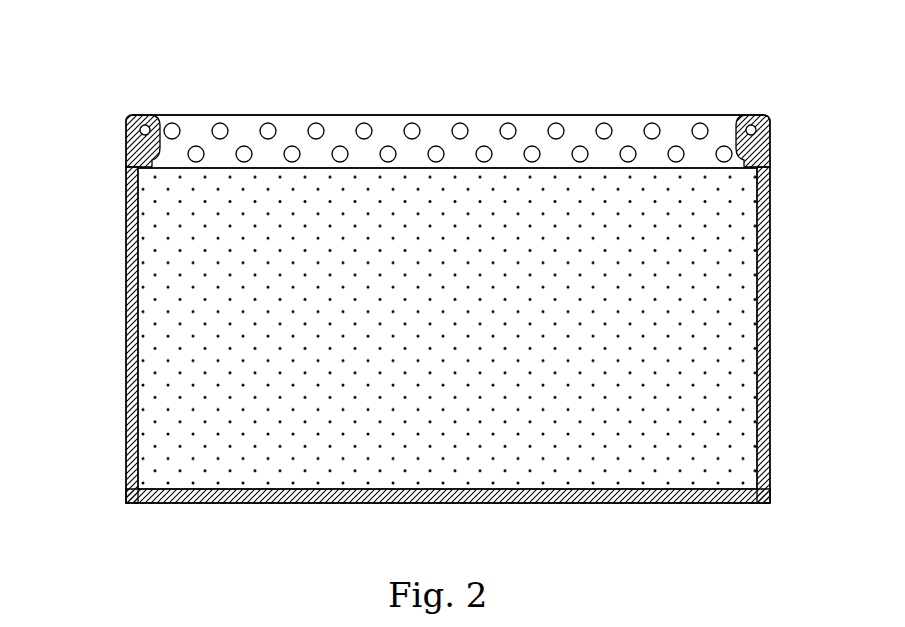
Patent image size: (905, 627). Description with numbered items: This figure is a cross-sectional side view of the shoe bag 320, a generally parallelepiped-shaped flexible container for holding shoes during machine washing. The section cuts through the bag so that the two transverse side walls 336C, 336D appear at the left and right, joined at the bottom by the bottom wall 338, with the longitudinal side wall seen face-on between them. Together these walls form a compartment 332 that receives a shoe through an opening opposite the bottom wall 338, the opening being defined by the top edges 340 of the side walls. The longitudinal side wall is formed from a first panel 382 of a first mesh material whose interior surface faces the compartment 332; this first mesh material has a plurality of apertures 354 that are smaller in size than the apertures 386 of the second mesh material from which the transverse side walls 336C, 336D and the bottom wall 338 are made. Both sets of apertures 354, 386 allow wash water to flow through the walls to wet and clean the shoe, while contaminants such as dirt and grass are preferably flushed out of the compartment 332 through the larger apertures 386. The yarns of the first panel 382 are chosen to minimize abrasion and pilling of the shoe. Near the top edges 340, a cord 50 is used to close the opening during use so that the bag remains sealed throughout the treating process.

The shoe bag 320 is at (742, 55).
The cord 50 is at (147, 121).
The first panel 382 is at (270, 205).
The compartment 332 is at (381, 186).
The top edges 340 is at (522, 115).
The apertures 386 is at (628, 146).
The transverse side wall 336C is at (125, 243).
The transverse side wall 336D is at (770, 313).
The apertures 354 is at (182, 437).
The bottom wall 338 is at (435, 497).